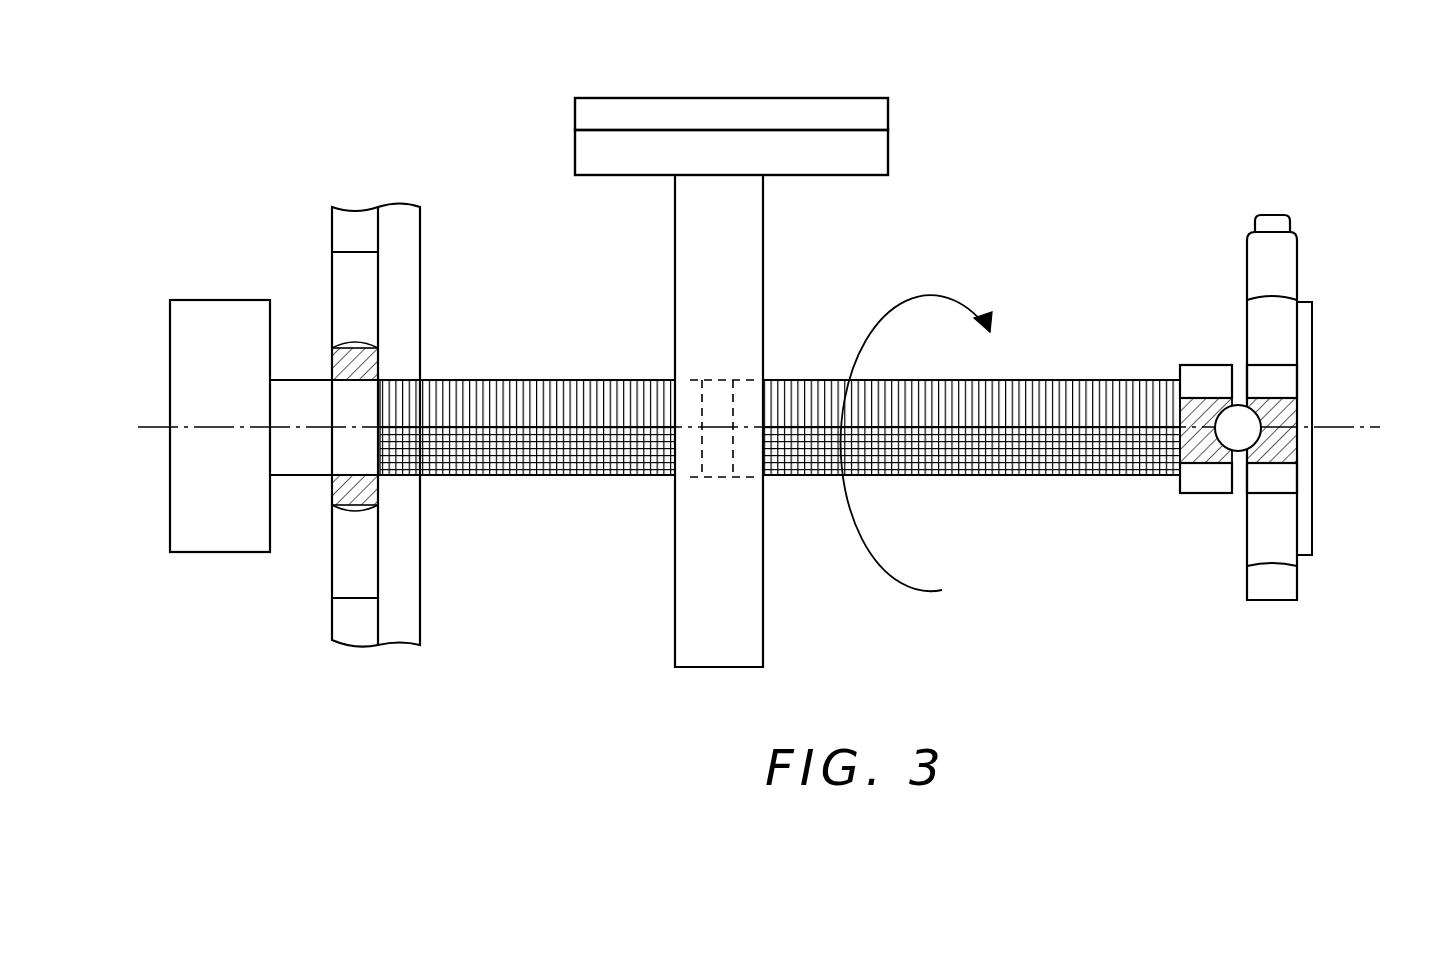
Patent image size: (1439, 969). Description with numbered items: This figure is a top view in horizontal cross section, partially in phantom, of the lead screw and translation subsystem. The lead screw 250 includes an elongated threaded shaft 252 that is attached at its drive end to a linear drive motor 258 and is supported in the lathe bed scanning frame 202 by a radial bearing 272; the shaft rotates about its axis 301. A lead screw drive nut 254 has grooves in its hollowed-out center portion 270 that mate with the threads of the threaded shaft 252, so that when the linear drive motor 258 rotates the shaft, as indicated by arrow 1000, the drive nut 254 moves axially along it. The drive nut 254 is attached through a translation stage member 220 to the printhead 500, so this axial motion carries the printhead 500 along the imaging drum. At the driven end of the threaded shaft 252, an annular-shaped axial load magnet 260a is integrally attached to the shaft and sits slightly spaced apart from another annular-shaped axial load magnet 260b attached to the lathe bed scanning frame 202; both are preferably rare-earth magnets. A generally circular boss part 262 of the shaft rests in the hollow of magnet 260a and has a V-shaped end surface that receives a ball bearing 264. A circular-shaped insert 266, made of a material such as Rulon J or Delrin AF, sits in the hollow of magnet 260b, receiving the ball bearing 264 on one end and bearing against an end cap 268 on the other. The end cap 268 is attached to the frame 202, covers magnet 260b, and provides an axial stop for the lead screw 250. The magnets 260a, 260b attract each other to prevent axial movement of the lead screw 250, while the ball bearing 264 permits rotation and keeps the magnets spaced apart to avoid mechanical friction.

The lead screw 250 is at (681, 104).
The printhead 500 is at (575, 104).
The translation stage member 220 is at (575, 148).
The linear drive motor 258 is at (216, 300).
The radial bearing 272 is at (332, 378).
The axis of rotation 301 is at (152, 427).
The lathe bed scanning frame 202 is at (332, 620).
The threaded shaft 252 is at (470, 478).
The hollowed-out center portion 270 is at (672, 480).
The lead screw drive nut 254 is at (675, 660).
The arrow 1000 is at (947, 298).
The annular-shaped axial load magnet 260a is at (1203, 365).
The annular-shaped axial load magnet 260b is at (1250, 490).
The boss part 262 is at (1192, 410).
The ball bearing 264 is at (1265, 410).
The circular-shaped insert 266 is at (1290, 456).
The end cap 268 is at (1305, 335).